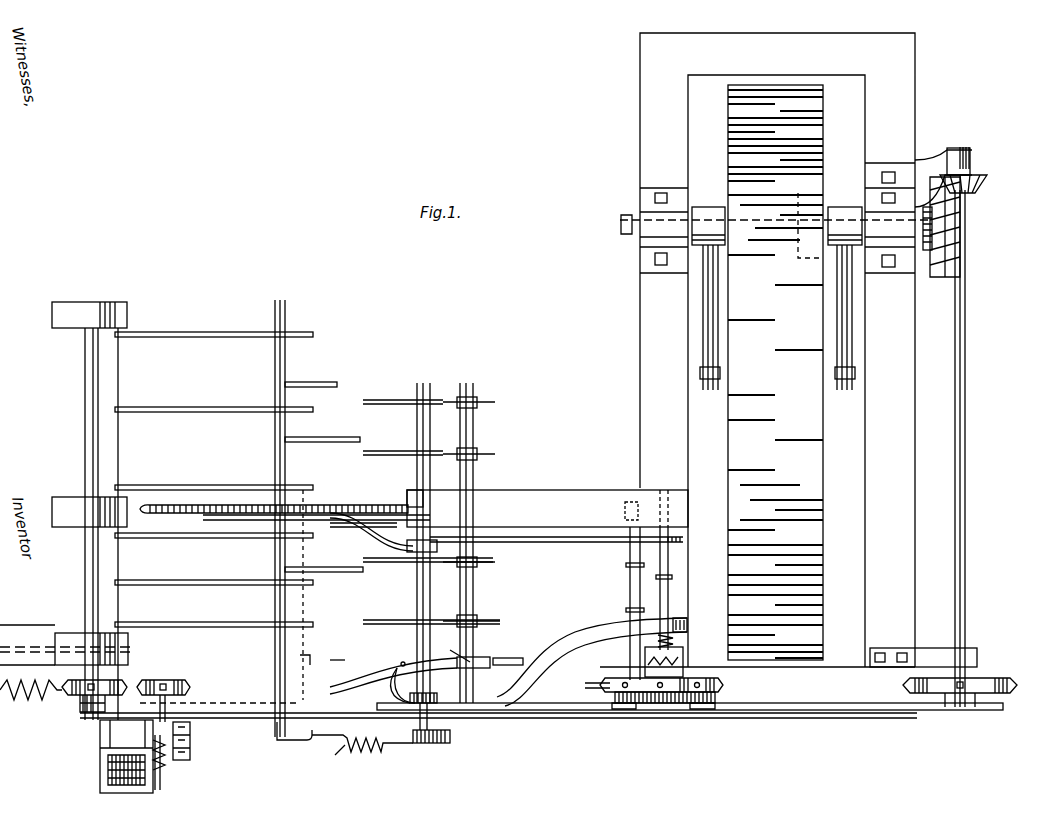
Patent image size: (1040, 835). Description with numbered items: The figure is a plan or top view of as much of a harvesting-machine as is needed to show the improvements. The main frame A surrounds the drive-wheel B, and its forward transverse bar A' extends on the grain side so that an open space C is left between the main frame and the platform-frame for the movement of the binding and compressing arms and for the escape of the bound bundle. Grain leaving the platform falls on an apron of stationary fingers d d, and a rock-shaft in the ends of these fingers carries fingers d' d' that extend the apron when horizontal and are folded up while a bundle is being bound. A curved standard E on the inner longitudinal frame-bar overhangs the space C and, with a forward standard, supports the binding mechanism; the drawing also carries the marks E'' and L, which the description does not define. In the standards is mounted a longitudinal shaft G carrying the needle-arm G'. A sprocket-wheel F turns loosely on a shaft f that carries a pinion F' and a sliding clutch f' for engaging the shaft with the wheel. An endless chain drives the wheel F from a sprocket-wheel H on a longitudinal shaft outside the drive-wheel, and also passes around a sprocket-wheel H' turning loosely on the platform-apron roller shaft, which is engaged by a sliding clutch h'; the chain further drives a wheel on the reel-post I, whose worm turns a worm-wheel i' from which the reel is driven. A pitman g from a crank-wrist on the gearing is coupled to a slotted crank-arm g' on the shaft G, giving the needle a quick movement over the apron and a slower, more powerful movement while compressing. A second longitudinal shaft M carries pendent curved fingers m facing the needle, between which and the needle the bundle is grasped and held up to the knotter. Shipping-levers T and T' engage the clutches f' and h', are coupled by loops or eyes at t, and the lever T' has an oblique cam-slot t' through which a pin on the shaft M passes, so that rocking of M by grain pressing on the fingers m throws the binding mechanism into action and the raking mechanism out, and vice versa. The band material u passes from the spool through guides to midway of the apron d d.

The main frame A is at (788, 350).
The forward transverse bar A' is at (498, 697).
The drive-wheel B is at (777, 372).
The open space C is at (467, 512).
The curved standard E is at (547, 505).
The curved cam lever E'' is at (592, 657).
The sprocket-wheel F is at (673, 689).
The pinion F' is at (630, 729).
The shaft f is at (652, 603).
The sliding clutch f' is at (683, 630).
The longitudinal shaft G is at (418, 533).
The needle-arm G' is at (285, 498).
The pitman g is at (690, 722).
The slotted crank-arm g' is at (403, 702).
The sprocket-wheel H is at (960, 683).
The sprocket-wheel H' is at (77, 704).
The sliding clutch h' is at (85, 725).
The reel-post I is at (126, 756).
The worm-wheel i' is at (161, 762).
The curved link L is at (383, 535).
The longitudinal shaft M is at (479, 543).
The pendent curved fingers m is at (471, 512).
The shipping-lever T is at (340, 653).
The shipping-lever T' is at (508, 649).
The loops or eyes t is at (473, 649).
The oblique cam-slot t' is at (457, 647).
The stationary fingers d is at (214, 479).
The fingers d' is at (324, 491).
The band material u is at (309, 651).